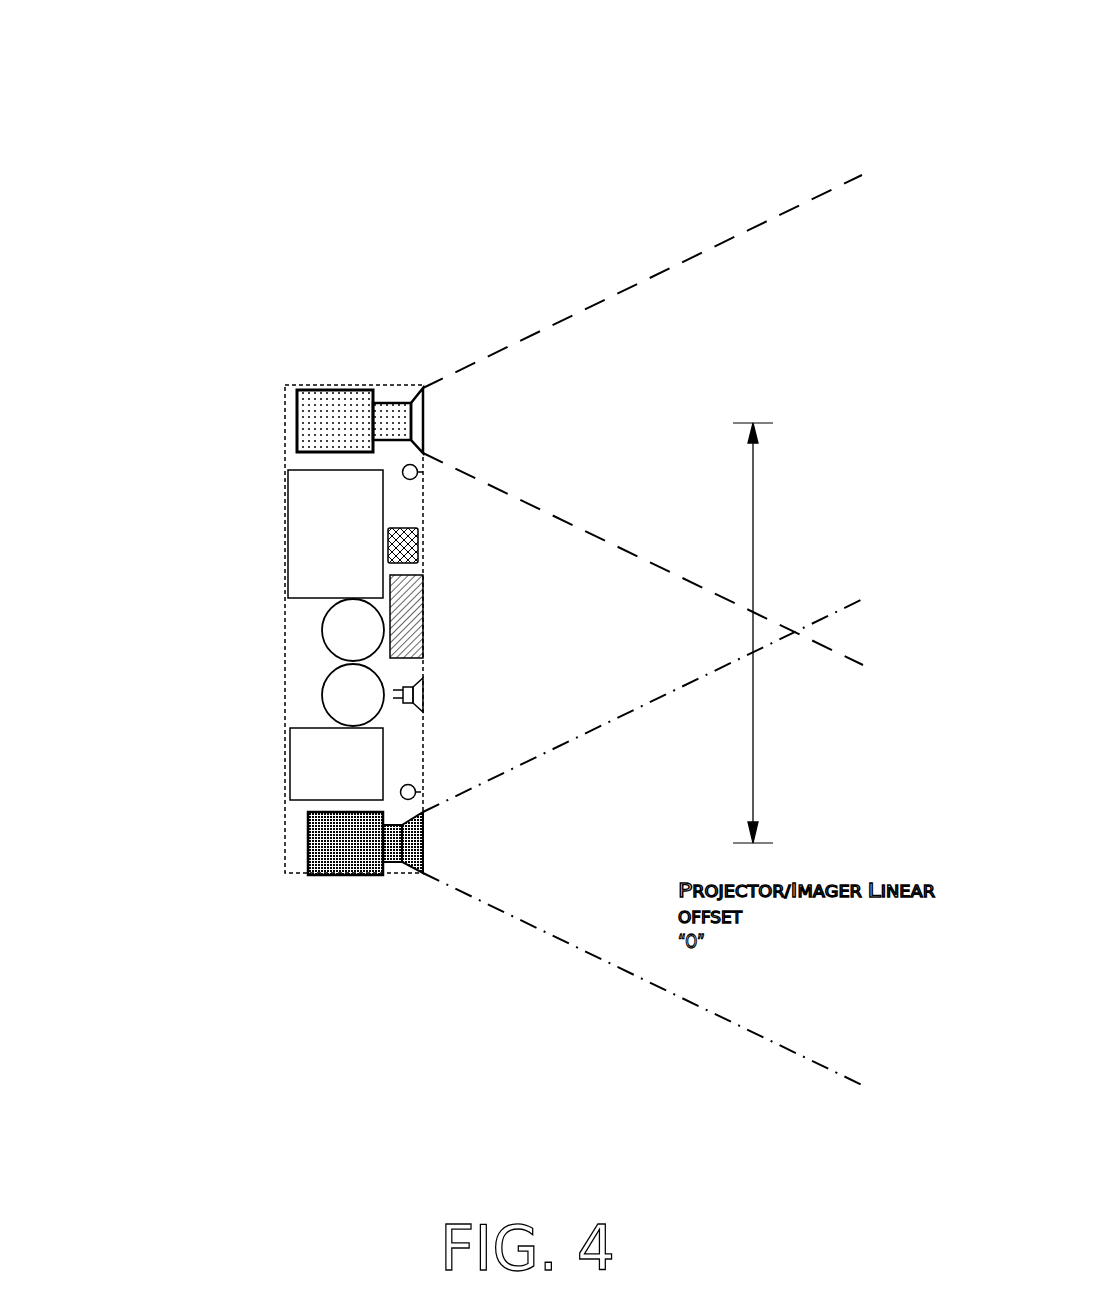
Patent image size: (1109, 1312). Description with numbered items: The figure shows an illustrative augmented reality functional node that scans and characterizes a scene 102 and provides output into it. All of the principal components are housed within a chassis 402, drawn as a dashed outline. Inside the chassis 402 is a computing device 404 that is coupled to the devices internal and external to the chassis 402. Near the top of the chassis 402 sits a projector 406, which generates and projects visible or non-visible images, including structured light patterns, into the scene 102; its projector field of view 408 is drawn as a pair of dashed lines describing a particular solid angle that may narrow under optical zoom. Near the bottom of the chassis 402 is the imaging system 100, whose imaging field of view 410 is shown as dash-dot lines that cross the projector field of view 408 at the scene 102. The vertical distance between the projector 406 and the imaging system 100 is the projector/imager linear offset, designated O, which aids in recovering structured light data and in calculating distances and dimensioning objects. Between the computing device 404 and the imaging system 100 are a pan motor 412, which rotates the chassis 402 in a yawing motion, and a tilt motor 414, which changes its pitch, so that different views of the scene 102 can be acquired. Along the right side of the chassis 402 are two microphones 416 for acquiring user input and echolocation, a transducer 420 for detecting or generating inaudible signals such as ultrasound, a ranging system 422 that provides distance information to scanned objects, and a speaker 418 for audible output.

The imaging system 100 is at (308, 875).
The scene 102 is at (910, 627).
The chassis 402 is at (356, 385).
The computing device 404 is at (335, 533).
The projector 406 is at (335, 420).
The projector field of view 408 is at (645, 274).
The imaging field of view 410 is at (592, 964).
The pan motor 412 is at (322, 631).
The tilt motor 414 is at (322, 698).
The microphone 416 is at (425, 458).
The speaker 418 is at (423, 693).
The transducer 420 is at (423, 530).
The ranging system 422 is at (423, 610).